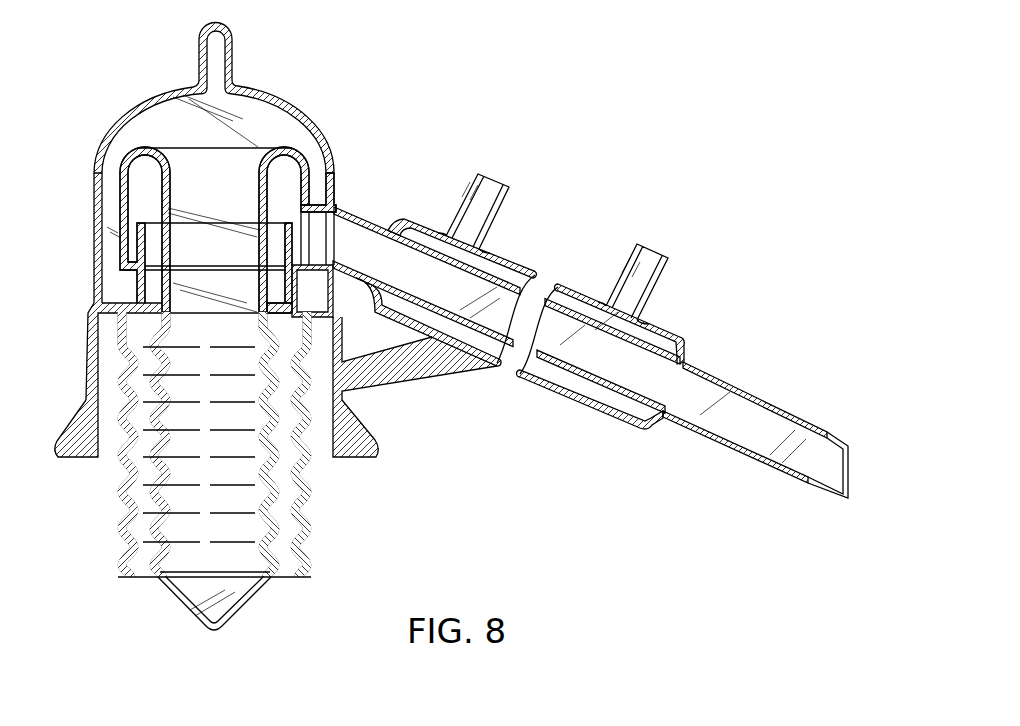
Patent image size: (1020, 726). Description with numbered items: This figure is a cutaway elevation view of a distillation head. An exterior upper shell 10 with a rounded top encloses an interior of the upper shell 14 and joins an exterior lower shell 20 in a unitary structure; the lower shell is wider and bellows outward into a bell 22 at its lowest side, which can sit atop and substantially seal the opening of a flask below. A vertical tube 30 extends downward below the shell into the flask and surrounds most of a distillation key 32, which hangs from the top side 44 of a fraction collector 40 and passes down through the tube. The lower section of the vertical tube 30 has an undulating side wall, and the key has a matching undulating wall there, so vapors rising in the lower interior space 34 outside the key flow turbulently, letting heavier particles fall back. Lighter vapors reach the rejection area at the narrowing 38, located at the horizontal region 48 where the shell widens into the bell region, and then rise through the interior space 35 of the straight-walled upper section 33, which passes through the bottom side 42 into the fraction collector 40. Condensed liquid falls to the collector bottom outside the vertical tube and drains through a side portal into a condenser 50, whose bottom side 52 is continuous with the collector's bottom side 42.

The exterior upper shell 10 is at (150, 97).
The interior of upper shell 14 is at (118, 151).
The exterior lower shell 20 is at (93, 370).
The bell of lower shell 22 is at (62, 445).
The vertical tube 30 is at (118, 513).
The distillation key 32 is at (235, 475).
The upper section of vertical tube 33 is at (190, 215).
The lower interior space of vertical tube 34 is at (146, 570).
The interior space of upper vertical tube 35 is at (150, 290).
The narrowing of vertical tube 38 is at (317, 318).
The fraction collector 40 is at (292, 185).
The bottom side of fraction collector 42 is at (238, 266).
The top side of fraction collector 44 is at (187, 148).
The beginning of bell region 48 is at (232, 316).
The condenser 50 is at (357, 218).
The bottom side of condenser 52 is at (309, 267).